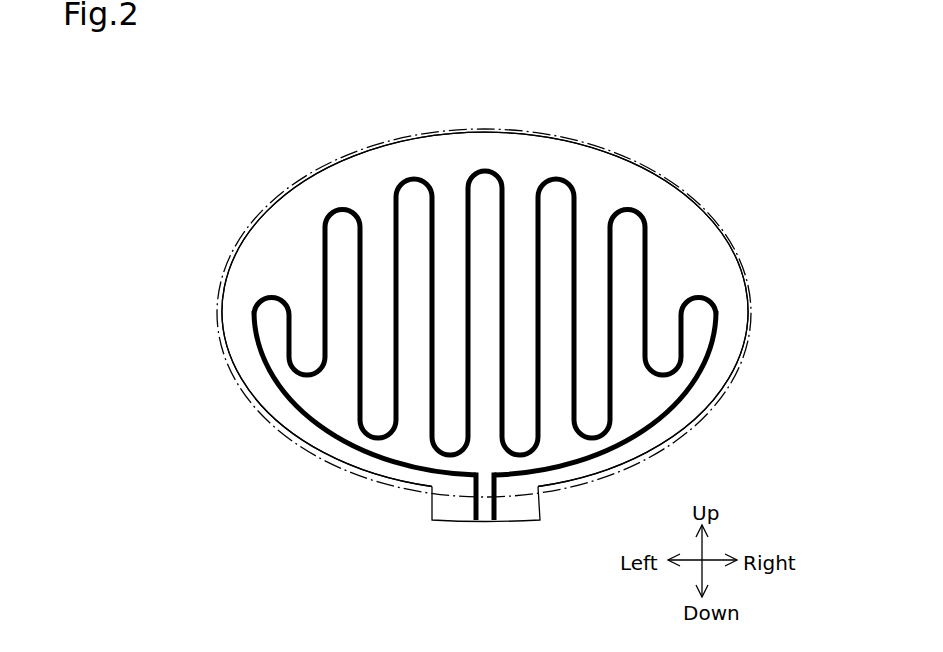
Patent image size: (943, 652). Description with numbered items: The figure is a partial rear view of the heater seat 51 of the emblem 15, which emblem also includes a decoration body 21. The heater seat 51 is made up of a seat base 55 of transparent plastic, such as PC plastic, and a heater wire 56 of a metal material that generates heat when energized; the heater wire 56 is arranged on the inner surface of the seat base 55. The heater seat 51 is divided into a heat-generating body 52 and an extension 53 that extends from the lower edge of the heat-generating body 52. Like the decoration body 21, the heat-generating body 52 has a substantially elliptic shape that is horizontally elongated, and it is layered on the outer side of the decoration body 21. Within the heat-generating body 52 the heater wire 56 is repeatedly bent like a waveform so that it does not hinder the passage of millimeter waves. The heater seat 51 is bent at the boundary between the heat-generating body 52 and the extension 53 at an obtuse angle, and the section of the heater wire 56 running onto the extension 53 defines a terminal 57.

The decoration body 21 is at (484, 305).
The emblem 15 is at (391, 142).
The heater seat 51 is at (485, 341).
The heat-generating body 52 is at (374, 466).
The extension 53 is at (432, 497).
The seat base 55 is at (705, 236).
The heater wire 56 is at (634, 208).
The terminal 57 is at (490, 521).